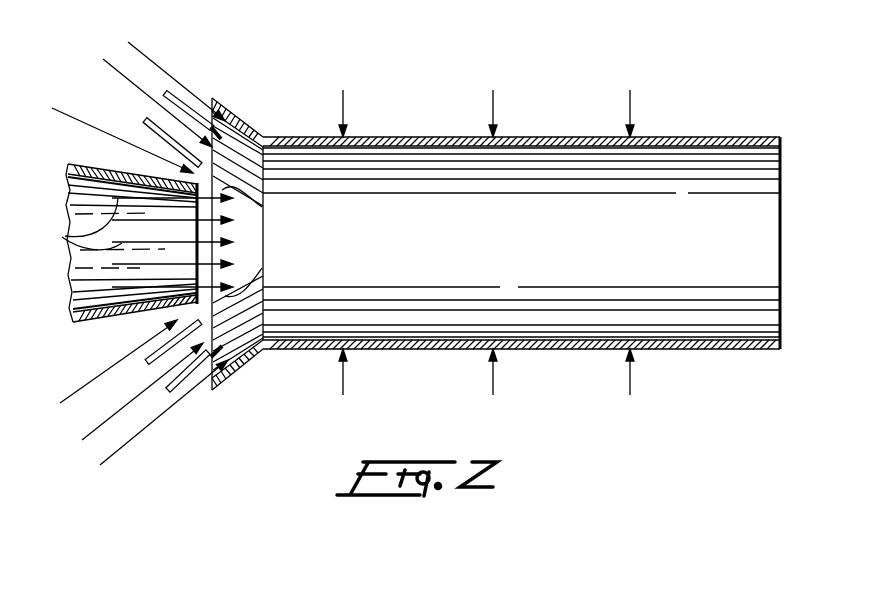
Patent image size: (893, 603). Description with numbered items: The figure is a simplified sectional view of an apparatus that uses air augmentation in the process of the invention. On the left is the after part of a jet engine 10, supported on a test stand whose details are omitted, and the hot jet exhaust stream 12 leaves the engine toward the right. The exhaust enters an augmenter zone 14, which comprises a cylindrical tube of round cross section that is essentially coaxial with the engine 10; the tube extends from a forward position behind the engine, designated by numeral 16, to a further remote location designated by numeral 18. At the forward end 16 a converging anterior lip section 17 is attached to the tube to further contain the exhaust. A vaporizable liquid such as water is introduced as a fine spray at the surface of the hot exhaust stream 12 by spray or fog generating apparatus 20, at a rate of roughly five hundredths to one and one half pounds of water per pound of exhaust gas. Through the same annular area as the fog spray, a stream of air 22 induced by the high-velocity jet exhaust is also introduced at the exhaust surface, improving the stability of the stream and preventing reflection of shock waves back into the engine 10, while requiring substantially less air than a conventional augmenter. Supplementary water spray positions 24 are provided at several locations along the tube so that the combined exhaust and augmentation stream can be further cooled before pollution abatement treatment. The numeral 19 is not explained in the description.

The after part of a jet engine 10 is at (93, 270).
The jet exhaust stream 12 is at (65, 236).
The augmenter zone 14 is at (568, 244).
The forward end of the augmenter tube 16 is at (263, 348).
The converging anterior lip section 17 is at (256, 136).
The remote end of the augmenter zone 18 is at (803, 249).
The flow lines in entrance region 19 is at (265, 207).
The spray or fog generating apparatus 20 is at (145, 121).
The induced air stream 22 is at (143, 55).
The supplementary water spray positions 24 is at (343, 98).